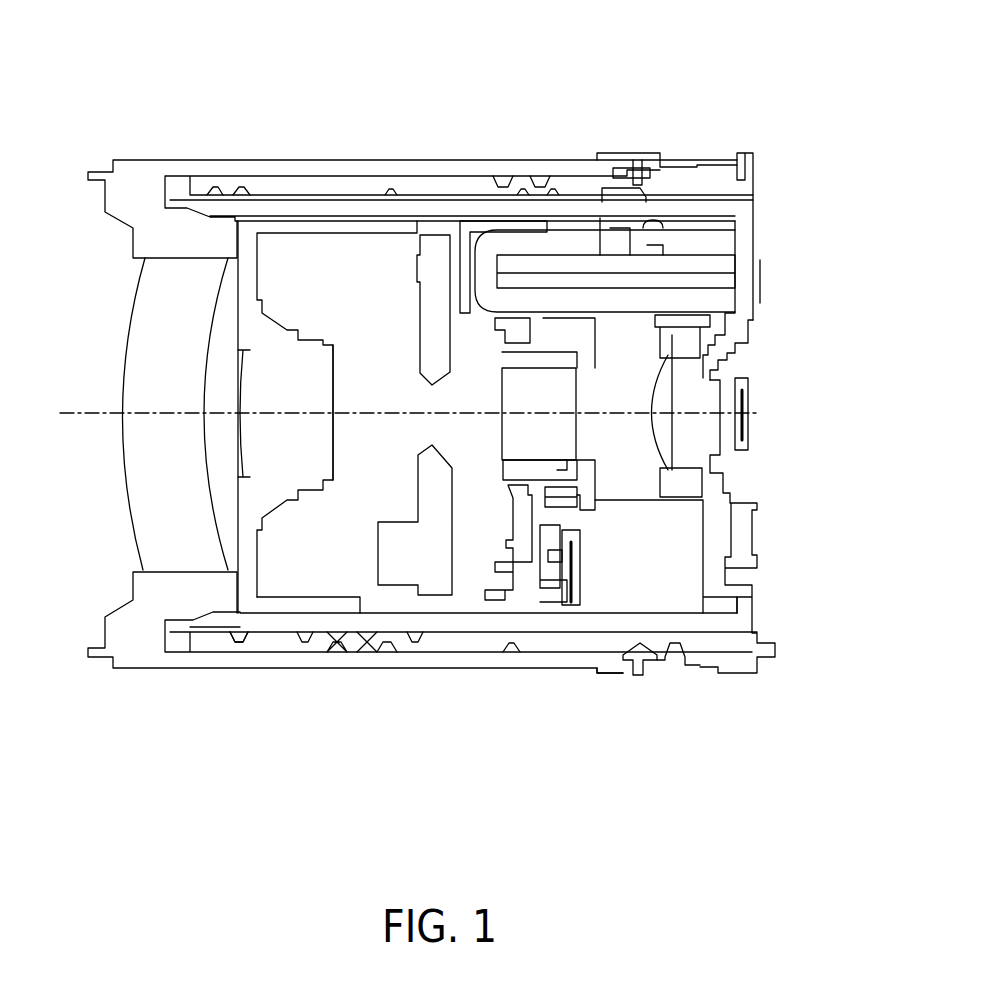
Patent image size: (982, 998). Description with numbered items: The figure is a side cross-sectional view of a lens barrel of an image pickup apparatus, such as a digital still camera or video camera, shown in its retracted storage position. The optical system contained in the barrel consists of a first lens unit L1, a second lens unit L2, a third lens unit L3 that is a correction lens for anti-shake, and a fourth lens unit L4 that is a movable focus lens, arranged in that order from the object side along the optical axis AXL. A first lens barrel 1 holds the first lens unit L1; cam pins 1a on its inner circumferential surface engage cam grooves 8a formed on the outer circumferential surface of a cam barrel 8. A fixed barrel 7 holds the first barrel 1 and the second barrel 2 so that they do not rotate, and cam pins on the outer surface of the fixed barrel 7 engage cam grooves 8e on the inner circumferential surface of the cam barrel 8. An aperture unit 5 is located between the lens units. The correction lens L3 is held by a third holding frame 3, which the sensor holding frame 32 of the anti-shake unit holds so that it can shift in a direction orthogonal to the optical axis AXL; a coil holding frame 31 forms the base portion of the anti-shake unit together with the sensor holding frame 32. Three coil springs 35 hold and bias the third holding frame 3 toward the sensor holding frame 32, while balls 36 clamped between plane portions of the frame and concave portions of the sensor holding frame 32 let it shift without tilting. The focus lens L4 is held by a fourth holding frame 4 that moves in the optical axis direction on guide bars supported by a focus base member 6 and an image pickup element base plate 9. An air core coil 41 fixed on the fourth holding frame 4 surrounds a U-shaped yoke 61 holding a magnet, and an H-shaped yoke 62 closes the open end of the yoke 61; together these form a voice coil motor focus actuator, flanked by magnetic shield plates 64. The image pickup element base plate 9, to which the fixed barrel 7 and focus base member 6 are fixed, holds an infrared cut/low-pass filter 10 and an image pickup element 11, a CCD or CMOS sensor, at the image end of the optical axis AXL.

The first lens barrel 1 is at (130, 178).
The cam pin 1a is at (640, 673).
The second barrel 2 is at (362, 228).
The third holding frame 3 is at (517, 385).
The fourth holding frame 4 is at (678, 340).
The aperture unit 5 is at (427, 248).
The focus base member 6 is at (677, 532).
The fixed barrel 7 is at (265, 623).
The cam barrel 8 is at (447, 647).
The cam groove 8a is at (670, 652).
The cam groove 8e is at (237, 641).
The image pickup element base plate 9 is at (745, 178).
The infrared cut/low-pass filter 10 is at (712, 433).
The image pickup element 11 is at (747, 383).
The coil holding frame 31 is at (517, 573).
The sensor holding frame 32 is at (562, 590).
The coil spring 35 is at (577, 603).
The ball 36 is at (538, 567).
The air core coil 41 is at (750, 315).
The yoke 61 is at (493, 247).
The yoke 62 is at (723, 270).
The magnetic shield plate 64 is at (517, 262).
The first lens unit L1 is at (173, 293).
The second lens unit L2 is at (265, 362).
The third lens unit L3 is at (540, 362).
The fourth lens unit L4 is at (652, 398).
The optical axis AXL is at (100, 410).